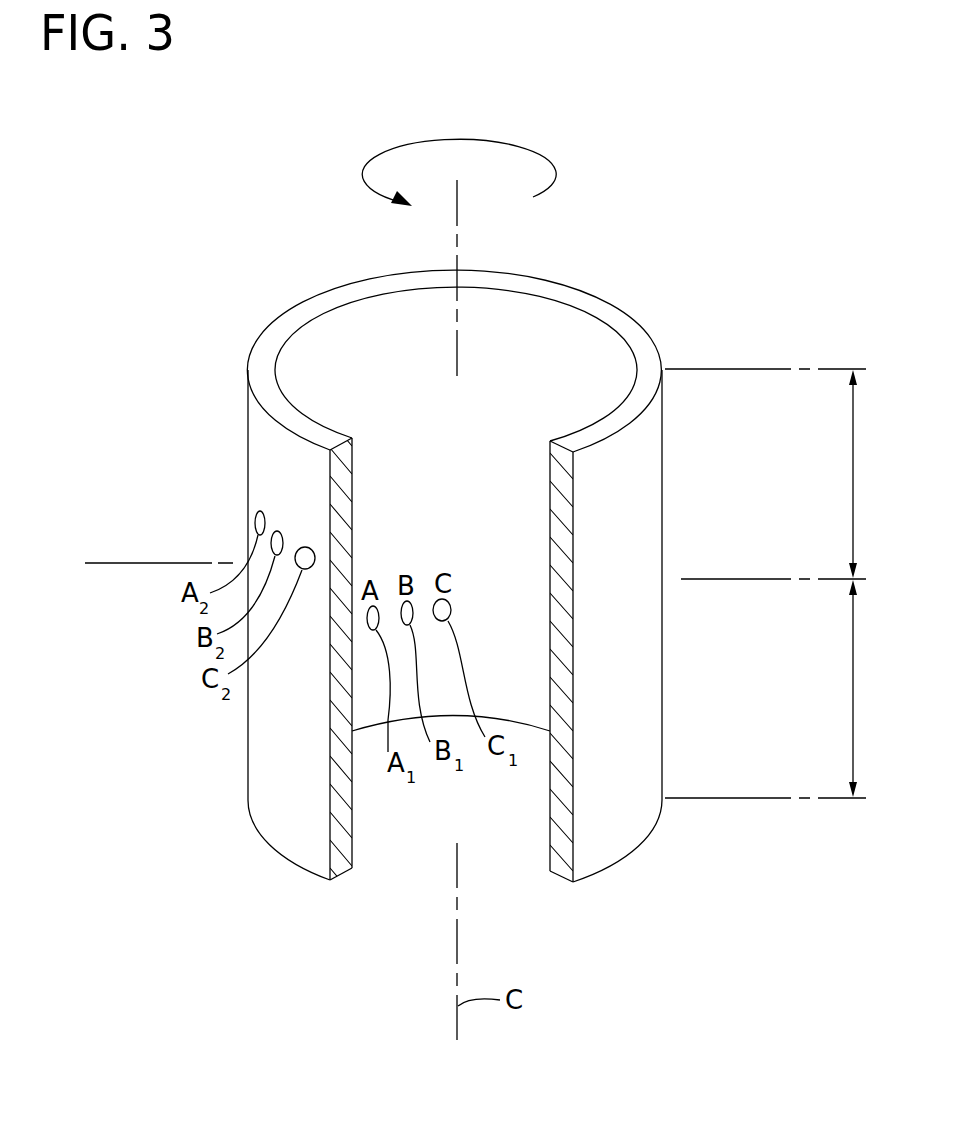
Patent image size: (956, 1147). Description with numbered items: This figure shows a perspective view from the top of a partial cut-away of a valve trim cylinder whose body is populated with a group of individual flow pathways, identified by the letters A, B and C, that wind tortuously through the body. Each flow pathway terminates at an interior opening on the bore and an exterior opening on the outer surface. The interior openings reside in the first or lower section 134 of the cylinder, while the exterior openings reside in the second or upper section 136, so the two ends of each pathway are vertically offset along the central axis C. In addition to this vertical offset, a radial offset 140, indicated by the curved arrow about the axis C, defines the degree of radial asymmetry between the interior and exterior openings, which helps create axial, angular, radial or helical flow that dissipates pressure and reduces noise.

The radial offset 140 is at (478, 144).
The upper section 136 is at (784, 474).
The lower section 134 is at (785, 689).